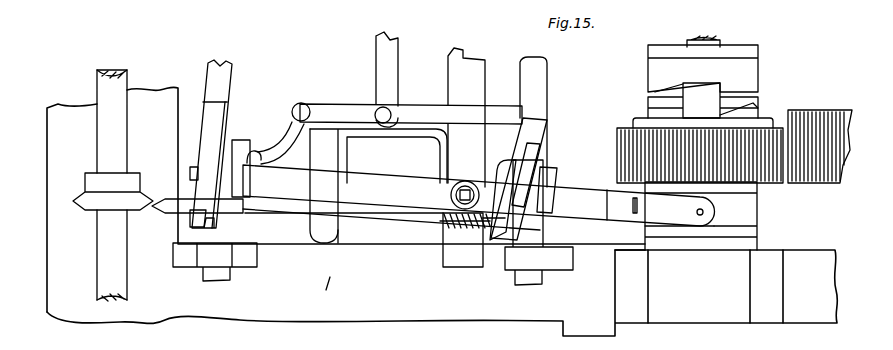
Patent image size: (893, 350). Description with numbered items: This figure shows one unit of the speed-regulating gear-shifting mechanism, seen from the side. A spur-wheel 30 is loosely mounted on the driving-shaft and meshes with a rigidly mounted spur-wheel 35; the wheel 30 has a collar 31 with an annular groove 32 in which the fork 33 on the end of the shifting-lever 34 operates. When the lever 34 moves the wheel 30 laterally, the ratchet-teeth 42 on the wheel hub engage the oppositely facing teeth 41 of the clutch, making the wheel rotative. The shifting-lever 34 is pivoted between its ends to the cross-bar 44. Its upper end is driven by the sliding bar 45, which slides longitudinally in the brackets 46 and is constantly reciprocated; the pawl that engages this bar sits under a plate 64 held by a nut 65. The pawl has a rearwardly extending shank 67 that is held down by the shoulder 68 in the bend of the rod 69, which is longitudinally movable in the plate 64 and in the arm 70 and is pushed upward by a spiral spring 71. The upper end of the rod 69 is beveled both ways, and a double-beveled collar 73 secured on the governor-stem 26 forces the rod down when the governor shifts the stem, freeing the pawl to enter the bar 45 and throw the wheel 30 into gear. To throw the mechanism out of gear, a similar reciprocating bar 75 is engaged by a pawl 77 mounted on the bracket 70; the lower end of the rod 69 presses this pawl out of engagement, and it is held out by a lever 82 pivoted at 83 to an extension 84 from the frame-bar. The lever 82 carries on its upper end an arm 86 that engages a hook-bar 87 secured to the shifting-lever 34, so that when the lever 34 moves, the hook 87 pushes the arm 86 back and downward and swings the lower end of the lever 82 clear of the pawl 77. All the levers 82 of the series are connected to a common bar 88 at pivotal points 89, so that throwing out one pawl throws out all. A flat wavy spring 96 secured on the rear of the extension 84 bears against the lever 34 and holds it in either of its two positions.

The stem 26 is at (105, 128).
The collar 73 is at (128, 178).
The sliding bar 45 is at (212, 77).
The pawl 77 is at (213, 133).
The nut 65 is at (191, 171).
The shoulder 68 is at (200, 203).
The plate 64 is at (188, 223).
The bracket 46 is at (207, 257).
The hook-bar 87 is at (249, 152).
The arm 86 is at (282, 143).
The pivot 83 is at (299, 104).
The extension 84 is at (321, 104).
The pivotal point 89 is at (377, 110).
The bar 88 is at (398, 50).
The cross-bar 44 is at (466, 117).
The lever 82 is at (503, 115).
The flat wavy spring 96 is at (332, 161).
The shifting-lever 34 is at (479, 195).
The rod 69 is at (267, 210).
The spiral spring 71 is at (457, 233).
The arm 70 is at (488, 245).
The reciprocating bar 75 is at (531, 237).
The shank 67 is at (528, 164).
The spur-wheel 30 is at (632, 135).
The spur-wheel 35 is at (806, 176).
The collar 31 is at (776, 203).
The tooth 41 is at (664, 92).
The ratchet-tooth 42 is at (738, 112).
The annular groove 32 is at (688, 208).
The fork 33 is at (673, 206).